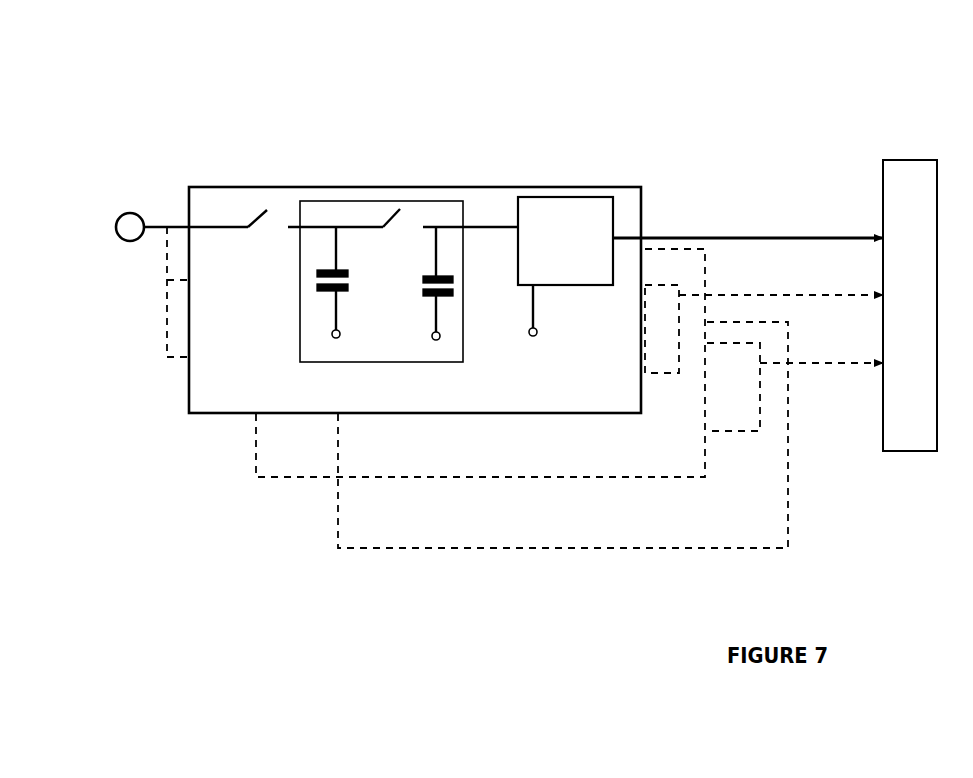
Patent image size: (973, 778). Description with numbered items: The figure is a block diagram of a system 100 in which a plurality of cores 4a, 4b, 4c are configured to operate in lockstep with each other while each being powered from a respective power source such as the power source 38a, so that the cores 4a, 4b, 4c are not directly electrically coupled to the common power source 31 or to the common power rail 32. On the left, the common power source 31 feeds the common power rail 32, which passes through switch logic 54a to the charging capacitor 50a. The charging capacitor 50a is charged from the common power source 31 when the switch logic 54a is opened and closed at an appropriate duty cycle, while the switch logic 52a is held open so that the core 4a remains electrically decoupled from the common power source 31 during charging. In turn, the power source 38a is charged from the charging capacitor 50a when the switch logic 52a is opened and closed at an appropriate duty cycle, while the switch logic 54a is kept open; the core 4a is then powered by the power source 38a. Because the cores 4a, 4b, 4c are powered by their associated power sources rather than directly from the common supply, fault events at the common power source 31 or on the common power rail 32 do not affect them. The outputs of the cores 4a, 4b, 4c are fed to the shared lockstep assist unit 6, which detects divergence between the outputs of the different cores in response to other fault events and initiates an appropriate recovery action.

The system 100 is at (790, 113).
The common power source 31 is at (122, 243).
The common power rail 32 is at (157, 223).
The switch logic 54a is at (257, 207).
The switch logic 52a is at (388, 205).
The charging capacitor 50a is at (322, 292).
The power source 38a is at (453, 300).
The core 4a is at (555, 236).
The core 4b is at (674, 315).
The core 4c is at (747, 376).
The lockstep assist unit 6 is at (906, 191).